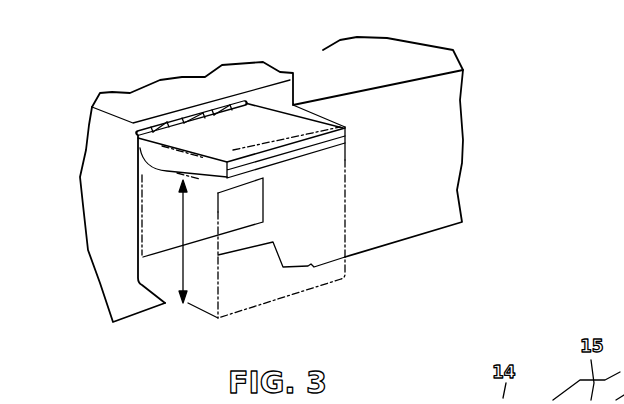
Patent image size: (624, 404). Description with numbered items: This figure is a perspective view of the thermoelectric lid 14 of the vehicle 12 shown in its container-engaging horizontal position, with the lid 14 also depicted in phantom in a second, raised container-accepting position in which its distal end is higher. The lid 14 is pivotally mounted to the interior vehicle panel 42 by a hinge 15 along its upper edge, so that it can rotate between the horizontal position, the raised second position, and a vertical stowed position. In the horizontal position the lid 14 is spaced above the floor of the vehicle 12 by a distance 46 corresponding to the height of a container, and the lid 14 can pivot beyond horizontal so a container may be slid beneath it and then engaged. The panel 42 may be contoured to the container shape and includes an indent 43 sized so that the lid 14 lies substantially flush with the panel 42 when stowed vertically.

The vehicle 12 is at (477, 183).
The thermoelectric lid 14 is at (212, 142).
The hinge 15 is at (228, 100).
The interior vehicle panel 42 is at (412, 140).
The indent 43 is at (157, 205).
The distance 46 is at (190, 257).